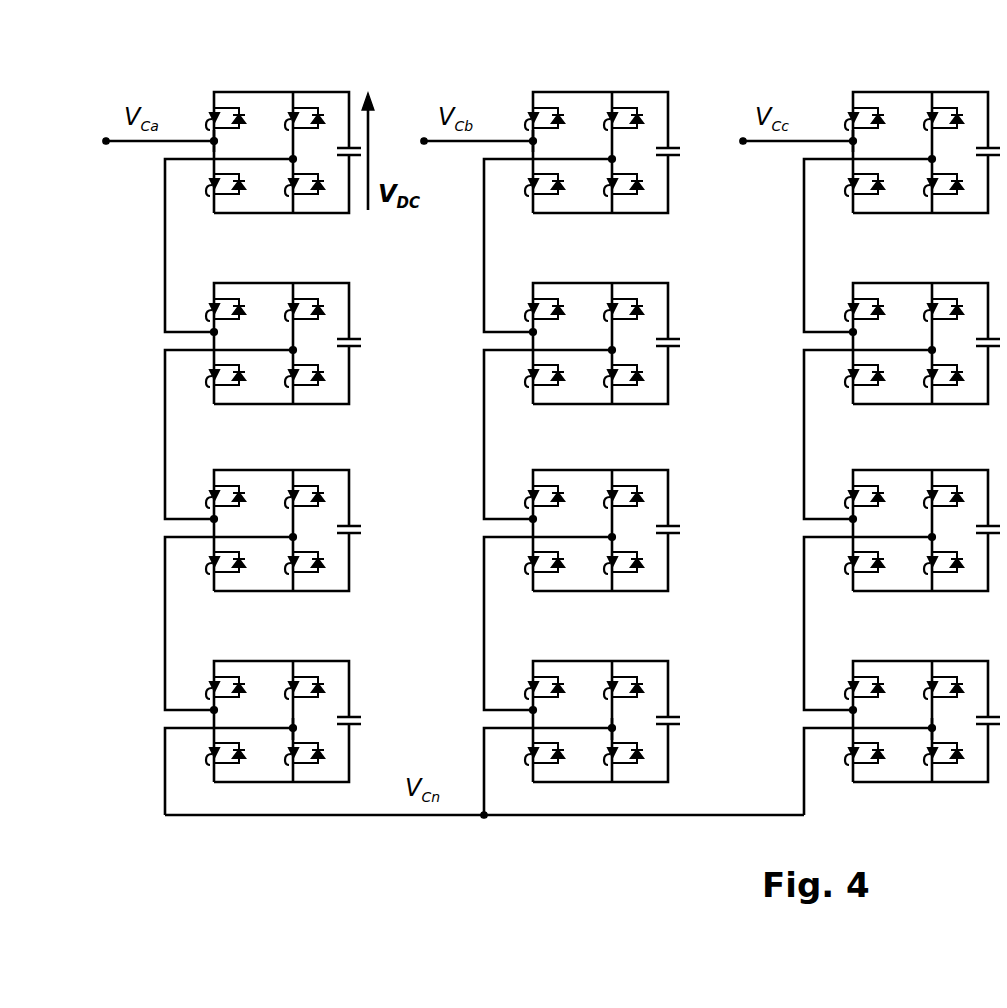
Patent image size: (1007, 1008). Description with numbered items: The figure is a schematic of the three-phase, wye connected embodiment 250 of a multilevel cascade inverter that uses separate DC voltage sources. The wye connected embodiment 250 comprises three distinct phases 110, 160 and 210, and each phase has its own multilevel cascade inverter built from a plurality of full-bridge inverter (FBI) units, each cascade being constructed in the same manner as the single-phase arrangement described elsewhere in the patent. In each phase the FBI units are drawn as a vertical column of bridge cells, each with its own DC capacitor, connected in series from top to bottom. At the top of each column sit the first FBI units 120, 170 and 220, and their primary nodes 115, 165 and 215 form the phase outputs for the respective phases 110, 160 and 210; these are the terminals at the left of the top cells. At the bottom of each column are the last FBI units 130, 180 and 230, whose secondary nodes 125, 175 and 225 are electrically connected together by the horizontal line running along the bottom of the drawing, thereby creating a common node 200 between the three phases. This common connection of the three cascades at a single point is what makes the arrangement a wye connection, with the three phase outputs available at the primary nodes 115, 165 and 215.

The phase 110 is at (177, 141).
The primary node 115 is at (218, 141).
The first FBI unit 120 is at (262, 92).
The secondary node 125 is at (312, 721).
The last FBI unit 130 is at (248, 661).
The phase 160 is at (496, 141).
The primary node 165 is at (537, 141).
The first FBI unit 170 is at (579, 92).
The secondary node 175 is at (633, 726).
The last FBI unit 180 is at (568, 661).
The common node 200 is at (482, 817).
The phase 210 is at (817, 141).
The primary node 215 is at (857, 141).
The first FBI unit 220 is at (902, 92).
The secondary node 225 is at (952, 729).
The last FBI unit 230 is at (887, 661).
The wye connected embodiment 250 is at (264, 831).